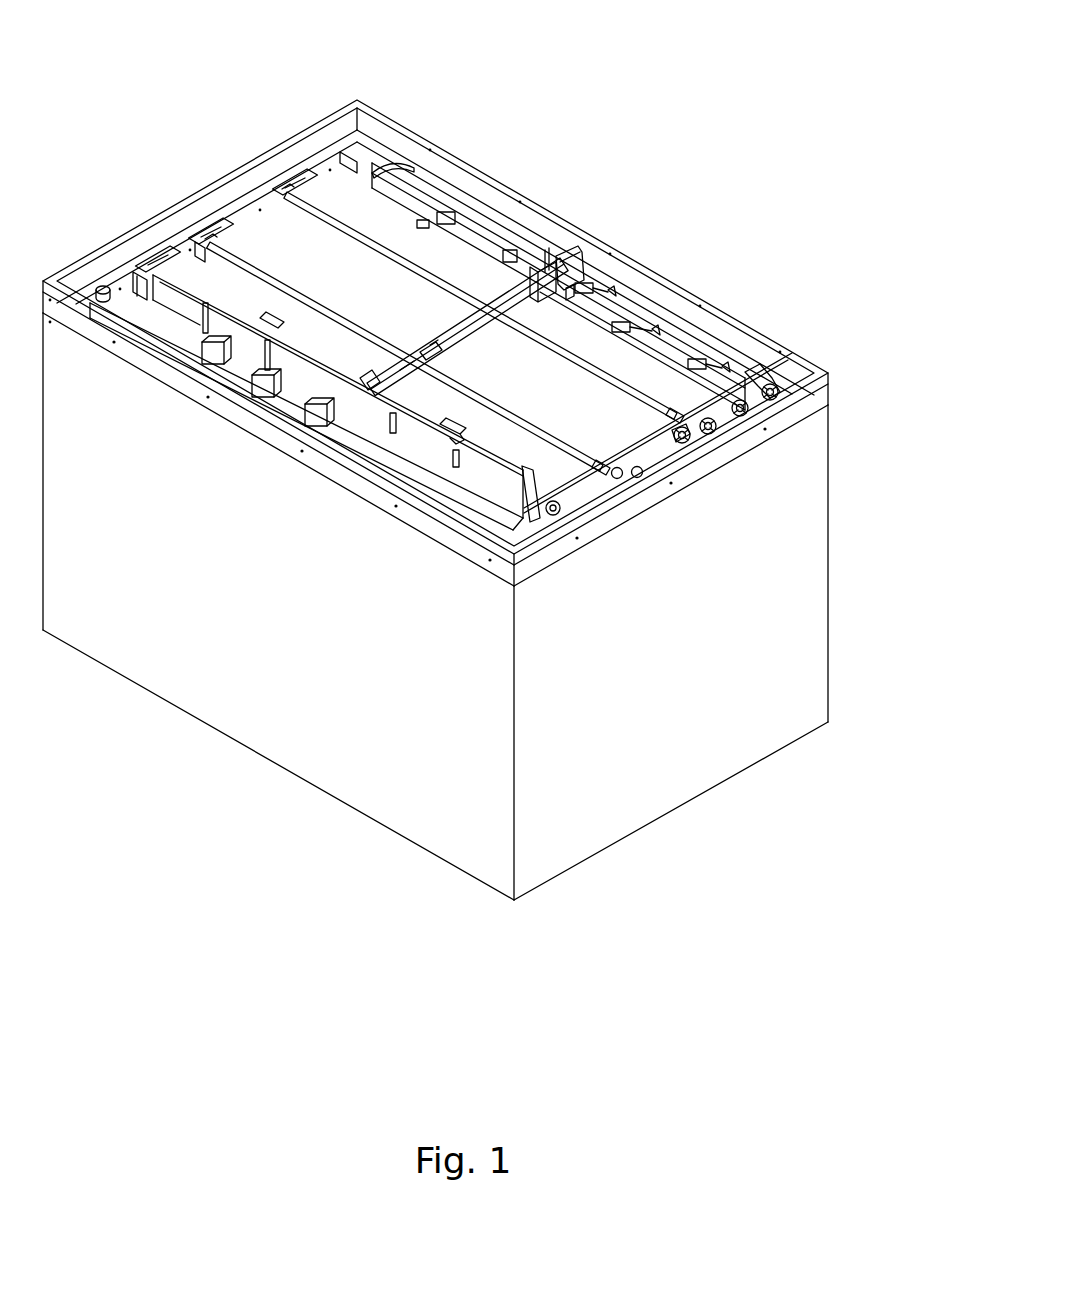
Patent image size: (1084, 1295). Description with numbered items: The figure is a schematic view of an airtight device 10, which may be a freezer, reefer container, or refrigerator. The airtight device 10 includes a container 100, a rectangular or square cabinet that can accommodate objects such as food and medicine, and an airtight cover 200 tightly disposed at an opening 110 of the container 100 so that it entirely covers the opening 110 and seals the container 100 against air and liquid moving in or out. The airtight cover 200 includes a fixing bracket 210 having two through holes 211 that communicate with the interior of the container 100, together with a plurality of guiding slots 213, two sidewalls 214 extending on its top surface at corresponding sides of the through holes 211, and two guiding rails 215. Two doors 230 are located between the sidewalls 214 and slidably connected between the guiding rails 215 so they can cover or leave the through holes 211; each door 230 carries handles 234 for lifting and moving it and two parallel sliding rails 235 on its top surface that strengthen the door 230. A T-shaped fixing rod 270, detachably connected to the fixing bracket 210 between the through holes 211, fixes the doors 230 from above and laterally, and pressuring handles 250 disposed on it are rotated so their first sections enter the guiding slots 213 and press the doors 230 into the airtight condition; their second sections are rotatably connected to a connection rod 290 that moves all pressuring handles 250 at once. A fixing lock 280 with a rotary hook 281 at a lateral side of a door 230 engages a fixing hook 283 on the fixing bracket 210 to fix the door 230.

The airtight device 10 is at (880, 30).
The container 100 is at (812, 702).
The opening 110 is at (800, 481).
The airtight cover 200 is at (842, 340).
The fixing bracket 210 is at (345, 128).
The through holes 211 is at (341, 186).
The guiding slots 213 is at (476, 196).
The sidewalls 214 is at (767, 382).
The guiding rails 215 is at (409, 156).
The doors 230 is at (172, 234).
The handles 234 is at (541, 284).
The sliding rails 235 is at (243, 257).
The pressuring handles 250 is at (603, 312).
The fixing rod 270 is at (560, 266).
The fixing lock 280 is at (756, 485).
The rotary hook 281 is at (714, 430).
The fixing hook 283 is at (683, 440).
The connection rod 290 is at (575, 273).